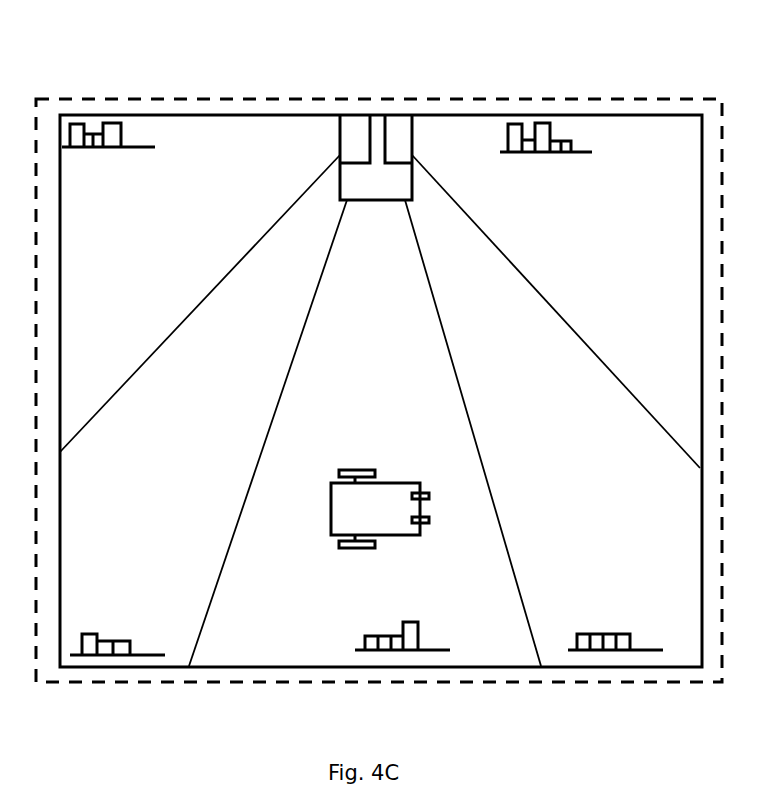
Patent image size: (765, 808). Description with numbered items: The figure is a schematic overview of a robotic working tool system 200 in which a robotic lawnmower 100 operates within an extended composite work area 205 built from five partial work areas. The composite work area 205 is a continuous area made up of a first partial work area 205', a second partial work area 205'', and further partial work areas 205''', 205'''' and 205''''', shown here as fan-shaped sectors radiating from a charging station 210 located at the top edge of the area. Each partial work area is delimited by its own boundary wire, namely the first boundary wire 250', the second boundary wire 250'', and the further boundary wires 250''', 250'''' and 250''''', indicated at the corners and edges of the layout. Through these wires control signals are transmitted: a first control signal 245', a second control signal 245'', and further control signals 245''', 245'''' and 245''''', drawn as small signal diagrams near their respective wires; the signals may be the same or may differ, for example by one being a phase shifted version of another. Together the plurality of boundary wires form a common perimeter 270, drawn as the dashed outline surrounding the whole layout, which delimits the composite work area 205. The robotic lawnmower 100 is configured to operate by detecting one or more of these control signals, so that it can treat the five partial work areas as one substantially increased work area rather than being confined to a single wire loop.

The robotic lawnmower 100 is at (380, 509).
The robotic working tool system 200 is at (154, 70).
The composite work area 205 is at (150, 591).
The first partial work area 205' is at (200, 303).
The second partial work area 205'' is at (556, 311).
The partial work area 205''' is at (268, 433).
The partial work area 205'''' is at (475, 433).
The partial work area 205''''' is at (370, 286).
The charging station 210 is at (376, 157).
The first control signal 245' is at (115, 135).
The second control signal 245'' is at (555, 137).
The control signal 245''' is at (125, 644).
The control signal 245'''' is at (627, 639).
The control signal 245''''' is at (415, 636).
The first boundary wire 250' is at (56, 85).
The second boundary wire 250'' is at (459, 74).
The boundary wire 250''' is at (123, 708).
The boundary wire 250'''' is at (683, 710).
The boundary wire 250''''' is at (470, 710).
The common perimeter 270 is at (580, 98).